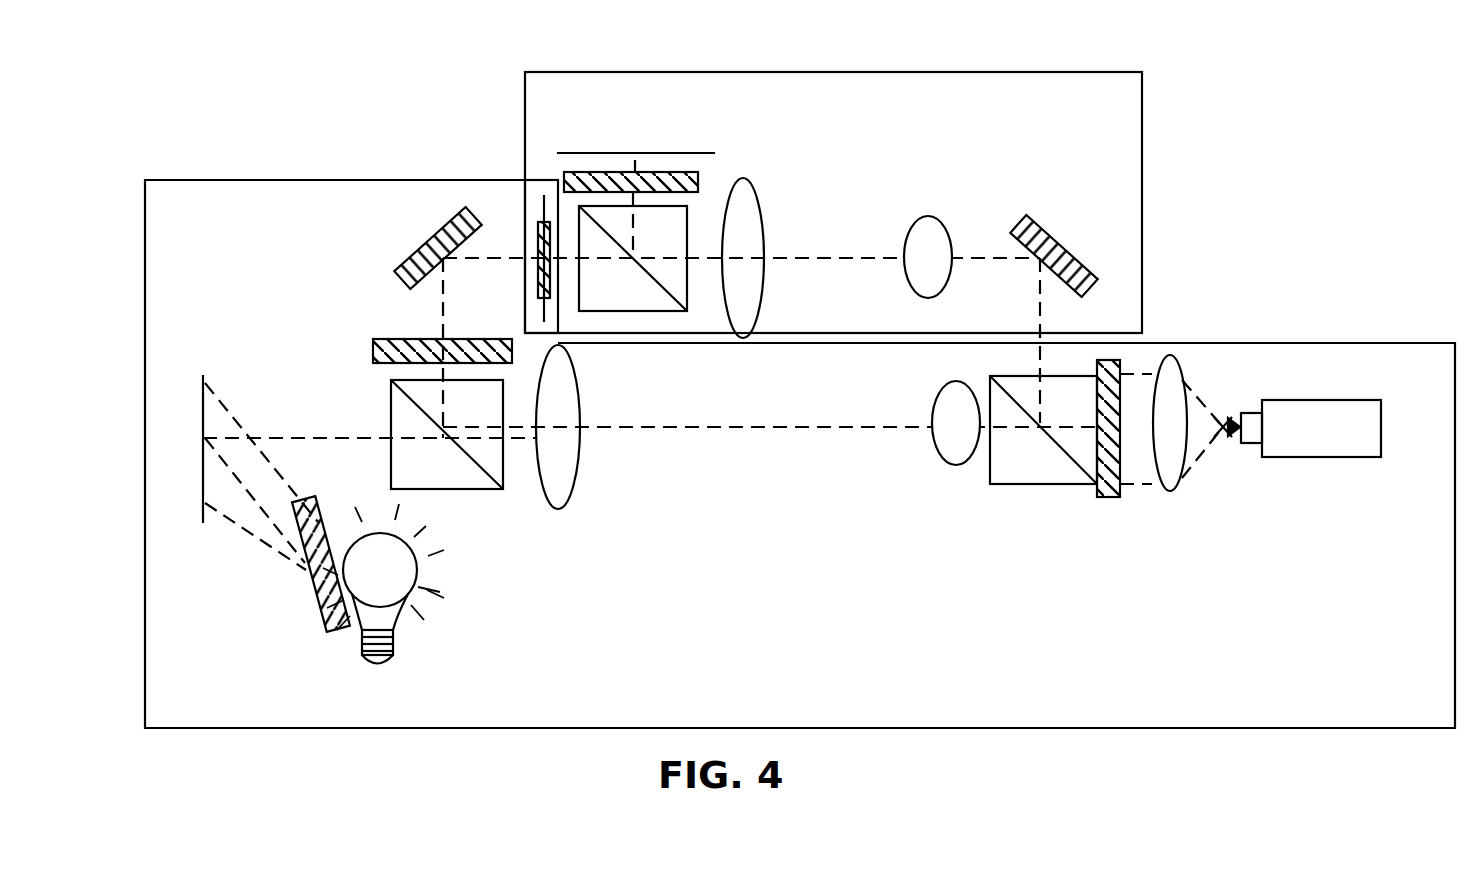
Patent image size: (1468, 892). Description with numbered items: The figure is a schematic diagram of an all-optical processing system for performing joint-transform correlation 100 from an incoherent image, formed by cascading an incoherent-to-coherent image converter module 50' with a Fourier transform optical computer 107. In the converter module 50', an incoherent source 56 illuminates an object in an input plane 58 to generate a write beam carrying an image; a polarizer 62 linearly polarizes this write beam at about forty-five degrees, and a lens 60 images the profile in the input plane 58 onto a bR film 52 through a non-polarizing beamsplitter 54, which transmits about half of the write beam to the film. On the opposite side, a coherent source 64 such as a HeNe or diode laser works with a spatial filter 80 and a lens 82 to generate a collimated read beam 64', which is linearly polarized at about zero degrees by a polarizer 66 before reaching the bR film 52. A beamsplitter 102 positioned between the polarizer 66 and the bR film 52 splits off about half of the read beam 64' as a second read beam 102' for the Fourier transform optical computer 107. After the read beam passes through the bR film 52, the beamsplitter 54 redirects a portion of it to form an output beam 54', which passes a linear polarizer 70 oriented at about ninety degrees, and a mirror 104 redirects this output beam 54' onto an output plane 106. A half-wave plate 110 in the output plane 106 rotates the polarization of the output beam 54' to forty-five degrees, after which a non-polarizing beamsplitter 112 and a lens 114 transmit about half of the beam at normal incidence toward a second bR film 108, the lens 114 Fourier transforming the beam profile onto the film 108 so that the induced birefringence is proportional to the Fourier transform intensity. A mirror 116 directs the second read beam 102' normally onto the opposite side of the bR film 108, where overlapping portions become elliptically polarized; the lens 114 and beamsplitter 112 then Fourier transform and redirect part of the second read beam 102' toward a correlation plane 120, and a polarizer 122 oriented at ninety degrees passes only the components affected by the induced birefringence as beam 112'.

The all-optical processing system for performing joint-transform correlation 100 is at (1250, 76).
The module for the incoherent-to-coherent image converter 50' is at (800, 486).
The Fourier transform optical computer 107 is at (1046, 68).
The output plane 106 is at (543, 203).
The half-wave plate 110 is at (540, 283).
The mirror 104 is at (415, 255).
The output beam 54' is at (603, 291).
The linear polarizer 70 is at (372, 352).
The correlation plane 120 is at (582, 153).
The beam 112' is at (648, 134).
The polarizer 122 is at (690, 170).
The non-polarizing beamsplitter 112 is at (650, 297).
The lens 114 is at (747, 215).
The second bR film 108 is at (930, 215).
The mirror 116 is at (1047, 225).
The second read beam 102' is at (1004, 301).
The input plane 58 is at (202, 510).
The non-polarizing beamsplitter 54 is at (448, 458).
The lens 60 is at (563, 480).
The polarizer 62 is at (300, 630).
The incoherent source 56 is at (388, 610).
The read beam 64' is at (1006, 456).
The bR film 52 is at (946, 448).
The beamsplitter 102 is at (1043, 461).
The polarizer 66 is at (1108, 497).
The lens 82 is at (1165, 475).
The spatial filter 80 is at (1228, 415).
The coherent source 64 is at (1311, 408).